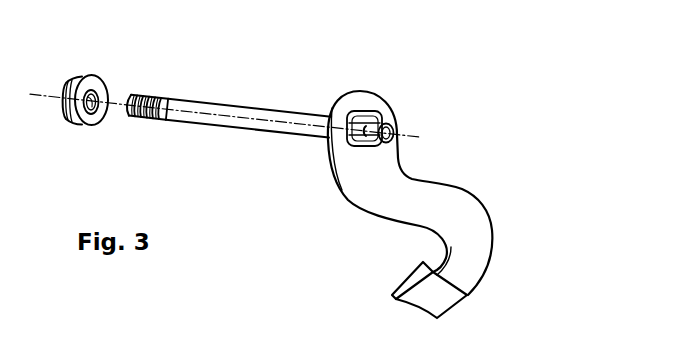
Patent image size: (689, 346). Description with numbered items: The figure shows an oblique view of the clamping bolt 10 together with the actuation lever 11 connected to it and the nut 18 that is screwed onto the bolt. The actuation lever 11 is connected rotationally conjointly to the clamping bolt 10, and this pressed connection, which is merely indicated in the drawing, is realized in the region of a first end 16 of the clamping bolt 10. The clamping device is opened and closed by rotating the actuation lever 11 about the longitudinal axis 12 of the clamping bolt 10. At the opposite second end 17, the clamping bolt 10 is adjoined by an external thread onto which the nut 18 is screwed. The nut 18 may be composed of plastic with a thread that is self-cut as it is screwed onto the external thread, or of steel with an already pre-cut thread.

The clamping bolt 10 is at (243, 123).
The actuation lever 11 is at (475, 225).
The longitudinal axis 12 is at (398, 135).
The first end 16 is at (385, 125).
The second end 17 is at (133, 115).
The nut 18 is at (70, 108).